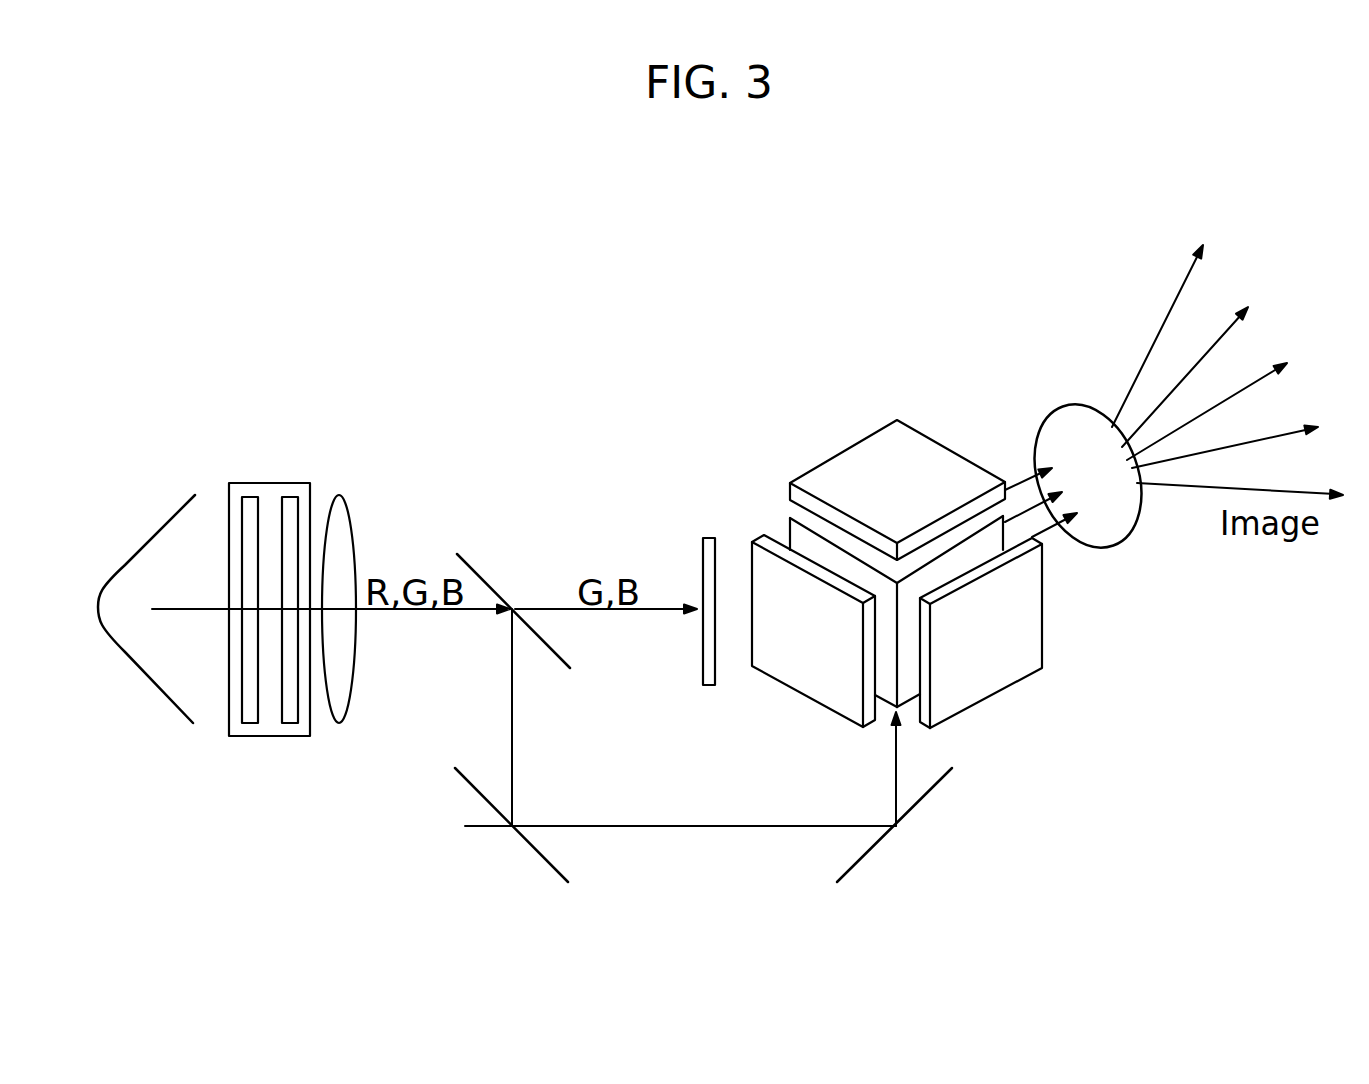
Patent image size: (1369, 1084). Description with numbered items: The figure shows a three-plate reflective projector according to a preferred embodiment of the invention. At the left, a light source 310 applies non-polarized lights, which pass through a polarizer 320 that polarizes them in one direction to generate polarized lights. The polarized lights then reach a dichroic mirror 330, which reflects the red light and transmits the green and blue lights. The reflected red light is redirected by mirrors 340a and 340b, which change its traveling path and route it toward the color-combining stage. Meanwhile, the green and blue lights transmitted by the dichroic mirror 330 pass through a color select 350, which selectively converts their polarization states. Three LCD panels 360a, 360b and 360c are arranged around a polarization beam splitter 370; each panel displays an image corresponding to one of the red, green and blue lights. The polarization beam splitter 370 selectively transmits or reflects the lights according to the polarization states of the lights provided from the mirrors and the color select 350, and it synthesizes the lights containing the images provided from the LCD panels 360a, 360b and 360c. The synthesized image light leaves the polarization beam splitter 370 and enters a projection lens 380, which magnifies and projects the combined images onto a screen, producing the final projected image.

The light source 310 is at (145, 650).
The polarizer 320 is at (270, 736).
The dichroic mirror 330 is at (478, 575).
The mirror 340a is at (533, 848).
The mirror 340b is at (917, 810).
The color select 350 is at (707, 538).
The LCD panel 360a is at (875, 448).
The LCD panel 360b is at (807, 682).
The LCD panel 360c is at (990, 673).
The polarization beam splitter 370 is at (792, 518).
The projection lens 380 is at (1062, 422).